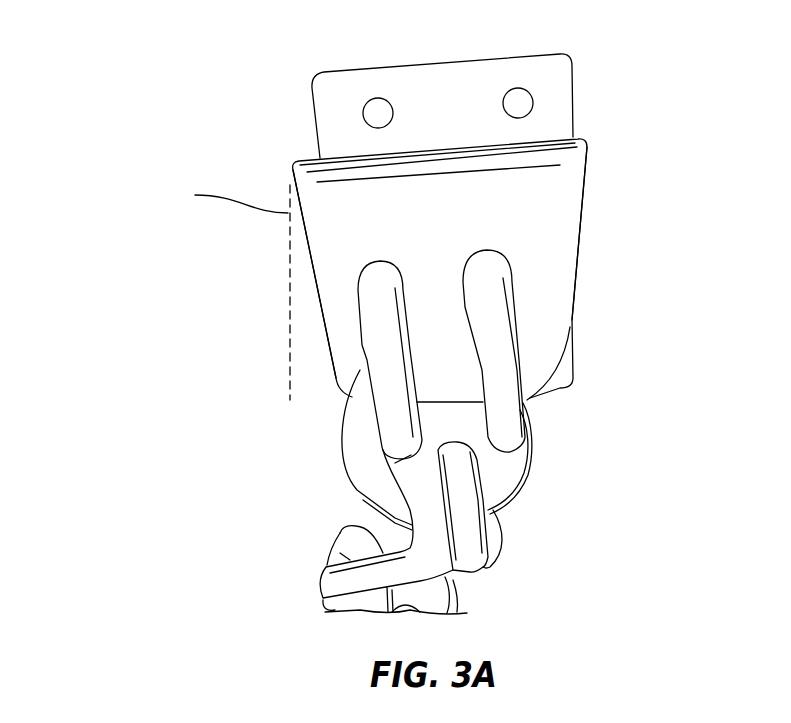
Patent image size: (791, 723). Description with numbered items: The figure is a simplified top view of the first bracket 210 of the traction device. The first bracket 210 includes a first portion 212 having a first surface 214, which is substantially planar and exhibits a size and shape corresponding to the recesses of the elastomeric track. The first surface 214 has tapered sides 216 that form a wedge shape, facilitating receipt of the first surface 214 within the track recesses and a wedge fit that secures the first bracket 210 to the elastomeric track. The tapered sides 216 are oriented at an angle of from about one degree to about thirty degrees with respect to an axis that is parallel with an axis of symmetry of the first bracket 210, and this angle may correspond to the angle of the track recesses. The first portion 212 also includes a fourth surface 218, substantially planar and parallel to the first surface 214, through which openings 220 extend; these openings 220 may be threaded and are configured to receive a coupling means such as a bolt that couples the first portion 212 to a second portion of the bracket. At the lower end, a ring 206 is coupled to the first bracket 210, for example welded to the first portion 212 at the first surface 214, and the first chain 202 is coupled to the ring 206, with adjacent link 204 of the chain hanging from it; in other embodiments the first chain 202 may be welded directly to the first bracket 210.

The first bracket 210 is at (162, 90).
The first portion 212 is at (597, 208).
The first surface 214 is at (445, 270).
The tapered sides 216 is at (317, 308).
The fourth surface 218 is at (442, 79).
The openings 220 is at (376, 98).
The ring 206 is at (517, 470).
The second chain link 204 is at (470, 550).
The first chain 202 is at (345, 542).